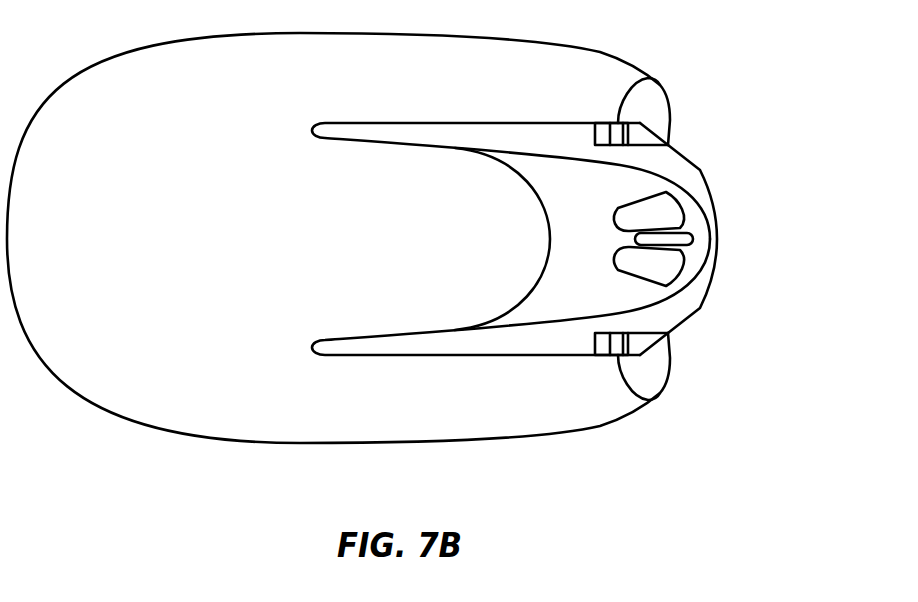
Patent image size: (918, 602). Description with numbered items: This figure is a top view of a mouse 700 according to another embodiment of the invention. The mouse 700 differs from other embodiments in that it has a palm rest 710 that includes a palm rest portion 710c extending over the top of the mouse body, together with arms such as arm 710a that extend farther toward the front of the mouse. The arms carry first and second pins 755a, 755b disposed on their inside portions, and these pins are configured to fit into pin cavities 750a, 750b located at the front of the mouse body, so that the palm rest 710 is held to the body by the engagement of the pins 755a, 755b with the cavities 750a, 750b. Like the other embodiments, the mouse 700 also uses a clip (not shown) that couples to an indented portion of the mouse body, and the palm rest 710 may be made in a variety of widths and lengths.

The mouse 700 is at (663, 467).
The palm rest 710 is at (233, 443).
The arm 710a is at (520, 85).
The palm rest portion 710c is at (205, 250).
The pin cavity 750a is at (667, 134).
The pin cavity 750b is at (667, 343).
The first pin 755a is at (660, 85).
The second pin 755b is at (660, 393).